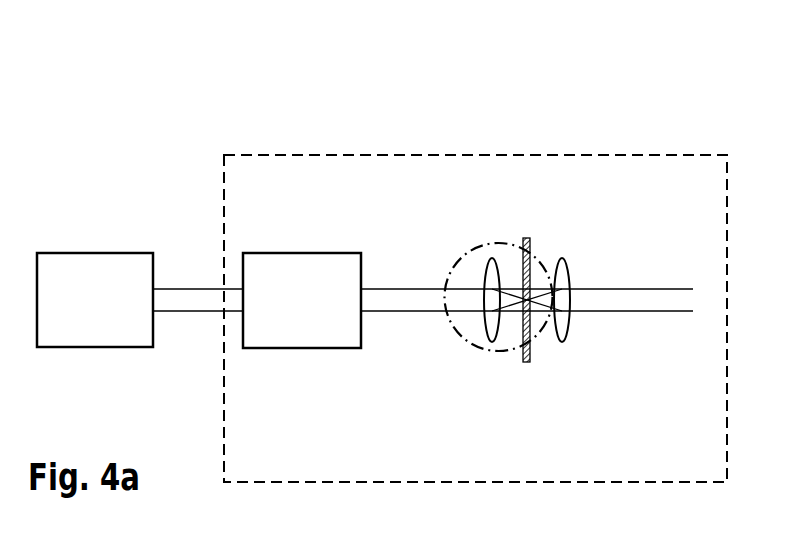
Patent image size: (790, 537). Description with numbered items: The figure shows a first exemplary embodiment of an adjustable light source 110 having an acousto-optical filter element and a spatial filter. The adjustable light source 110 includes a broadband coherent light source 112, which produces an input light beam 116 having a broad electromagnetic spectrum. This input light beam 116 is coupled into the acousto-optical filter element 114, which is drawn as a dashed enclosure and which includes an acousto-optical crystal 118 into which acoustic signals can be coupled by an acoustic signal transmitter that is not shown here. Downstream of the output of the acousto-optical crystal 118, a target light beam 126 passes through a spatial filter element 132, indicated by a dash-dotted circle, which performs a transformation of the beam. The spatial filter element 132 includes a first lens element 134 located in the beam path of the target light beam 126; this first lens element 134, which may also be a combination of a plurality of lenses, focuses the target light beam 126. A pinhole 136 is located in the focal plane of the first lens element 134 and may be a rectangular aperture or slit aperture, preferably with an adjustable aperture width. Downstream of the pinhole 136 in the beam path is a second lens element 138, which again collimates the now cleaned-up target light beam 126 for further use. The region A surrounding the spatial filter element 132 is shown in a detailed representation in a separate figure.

The adjustable light source 110 is at (148, 106).
The broadband coherent light source 112 is at (115, 314).
The acousto-optical filter element 114 is at (592, 152).
The input light beam 116 is at (196, 312).
The acousto-optical crystal 118 is at (321, 314).
The target light beam 126 is at (420, 313).
The spatial filter element 132 is at (506, 392).
The first lens element 134 is at (490, 267).
The pinhole 136 is at (527, 242).
The second lens element 138 is at (568, 267).
The region A is at (540, 258).